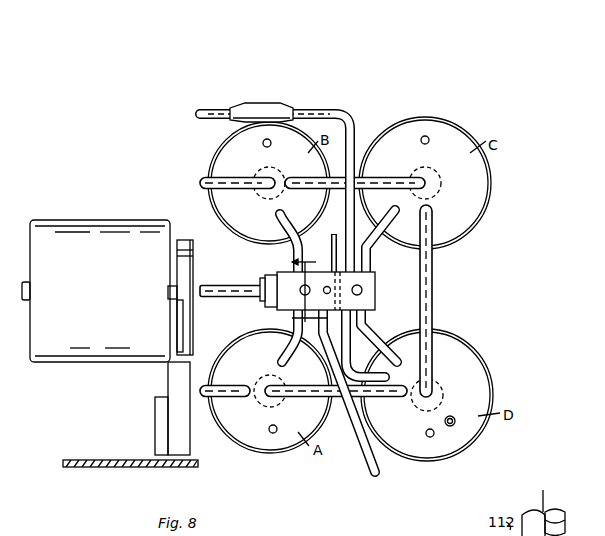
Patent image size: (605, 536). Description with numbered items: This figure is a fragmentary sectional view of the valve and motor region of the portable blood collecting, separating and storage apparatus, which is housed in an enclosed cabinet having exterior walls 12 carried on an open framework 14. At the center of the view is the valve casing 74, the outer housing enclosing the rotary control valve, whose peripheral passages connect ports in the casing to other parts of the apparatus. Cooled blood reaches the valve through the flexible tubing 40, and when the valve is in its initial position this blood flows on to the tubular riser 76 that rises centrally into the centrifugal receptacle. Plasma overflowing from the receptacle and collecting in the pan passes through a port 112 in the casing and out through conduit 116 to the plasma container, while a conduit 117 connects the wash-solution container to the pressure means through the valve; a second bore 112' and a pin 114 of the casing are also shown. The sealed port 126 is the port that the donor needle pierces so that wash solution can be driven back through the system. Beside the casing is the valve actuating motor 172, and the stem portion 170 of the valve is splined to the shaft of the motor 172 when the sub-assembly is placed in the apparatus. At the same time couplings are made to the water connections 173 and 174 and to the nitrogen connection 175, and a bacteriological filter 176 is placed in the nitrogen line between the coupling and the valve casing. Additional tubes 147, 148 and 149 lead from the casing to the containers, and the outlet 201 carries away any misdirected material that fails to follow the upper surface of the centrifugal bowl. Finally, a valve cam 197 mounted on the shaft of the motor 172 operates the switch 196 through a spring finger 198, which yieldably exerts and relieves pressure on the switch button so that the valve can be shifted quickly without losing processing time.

The exterior walls 12 is at (328, 326).
The open framework 14 is at (205, 202).
The flexible tubing 40 is at (370, 468).
The valve casing 74 is at (376, 284).
The tubular riser 76 is at (328, 287).
The port 112 is at (294, 283).
The bore 112' is at (387, 295).
The pin 114 is at (290, 254).
The conduit 116 is at (283, 347).
The conduit 117 is at (361, 372).
The sealed port 126 is at (453, 416).
The tube 147 is at (336, 246).
The tube 148 is at (369, 246).
The tube 149 is at (377, 328).
The stem portion 170 is at (238, 281).
The valve actuating motor 172 is at (97, 232).
The water connection 173 is at (225, 178).
The water connection 174 is at (233, 397).
The nitrogen connection 175 is at (212, 108).
The bacteriological filter 176 is at (272, 103).
The switch 196 is at (172, 378).
The valve cam 197 is at (186, 265).
The spring finger 198 is at (185, 319).
The outlet 201 is at (305, 211).